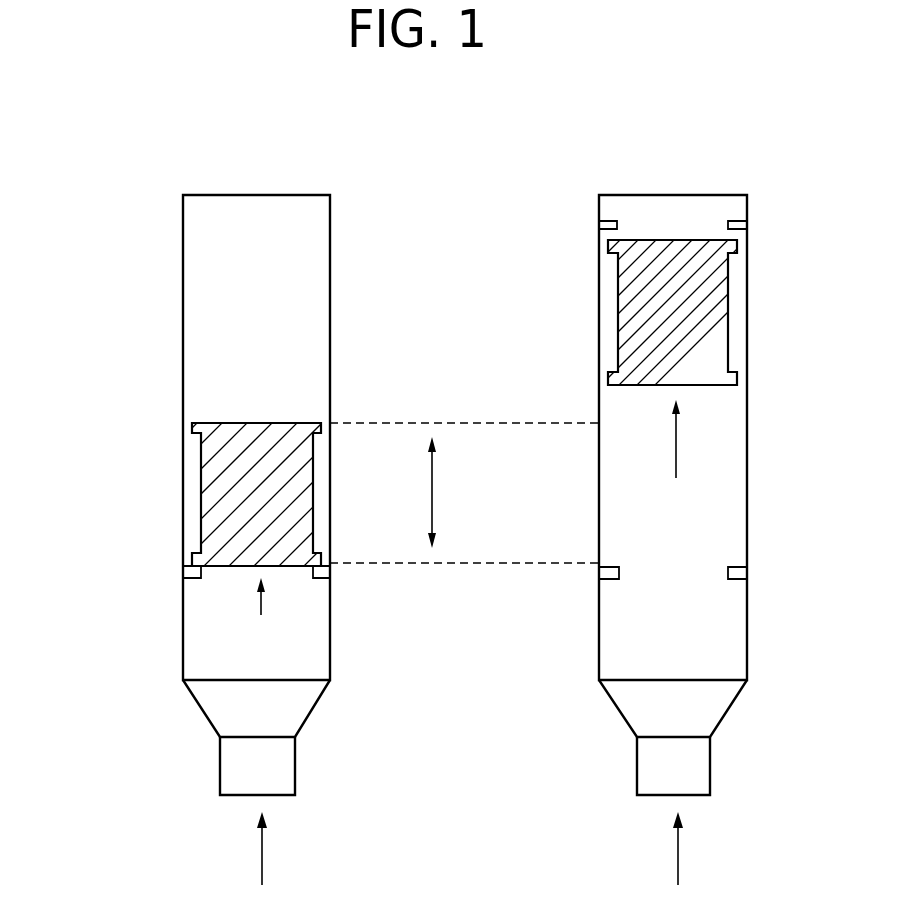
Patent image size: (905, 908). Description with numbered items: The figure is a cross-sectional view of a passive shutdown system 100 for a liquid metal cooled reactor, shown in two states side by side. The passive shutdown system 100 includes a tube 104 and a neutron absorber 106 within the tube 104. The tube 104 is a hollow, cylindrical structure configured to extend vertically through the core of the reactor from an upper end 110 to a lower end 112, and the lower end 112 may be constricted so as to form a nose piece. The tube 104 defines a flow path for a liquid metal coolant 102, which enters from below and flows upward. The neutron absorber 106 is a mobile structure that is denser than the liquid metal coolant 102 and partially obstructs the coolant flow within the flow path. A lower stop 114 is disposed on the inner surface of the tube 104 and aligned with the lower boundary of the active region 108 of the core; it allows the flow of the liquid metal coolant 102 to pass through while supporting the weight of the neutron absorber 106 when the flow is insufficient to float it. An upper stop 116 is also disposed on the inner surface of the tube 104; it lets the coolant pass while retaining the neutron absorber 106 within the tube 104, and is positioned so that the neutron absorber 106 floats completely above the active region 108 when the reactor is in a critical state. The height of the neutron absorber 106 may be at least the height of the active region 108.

The passive shutdown system 100 is at (452, 137).
The liquid metal coolant 102 is at (262, 857).
The tube 104 is at (183, 318).
The neutron absorber 106 is at (236, 467).
The active region 108 is at (505, 511).
The upper end 110 is at (158, 181).
The lower end 112 is at (186, 770).
The lower stop 114 is at (192, 572).
The upper stop 116 is at (735, 224).